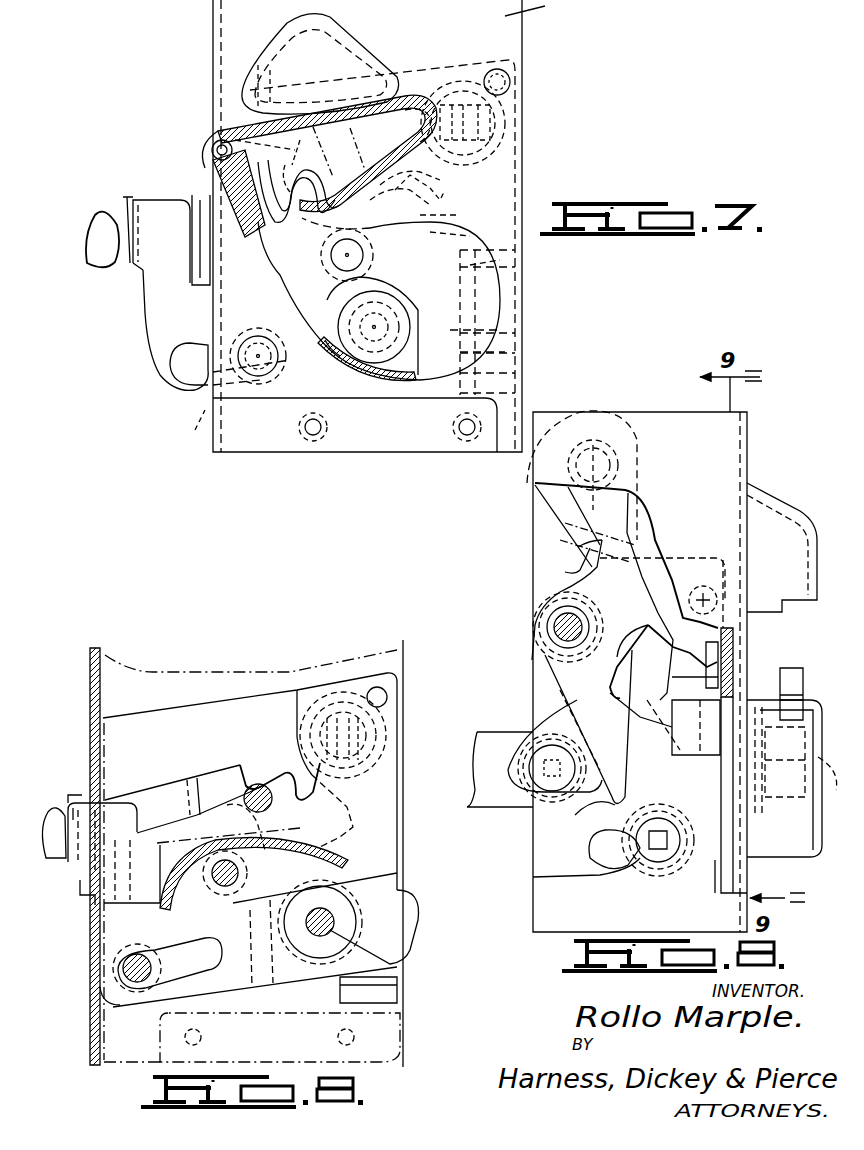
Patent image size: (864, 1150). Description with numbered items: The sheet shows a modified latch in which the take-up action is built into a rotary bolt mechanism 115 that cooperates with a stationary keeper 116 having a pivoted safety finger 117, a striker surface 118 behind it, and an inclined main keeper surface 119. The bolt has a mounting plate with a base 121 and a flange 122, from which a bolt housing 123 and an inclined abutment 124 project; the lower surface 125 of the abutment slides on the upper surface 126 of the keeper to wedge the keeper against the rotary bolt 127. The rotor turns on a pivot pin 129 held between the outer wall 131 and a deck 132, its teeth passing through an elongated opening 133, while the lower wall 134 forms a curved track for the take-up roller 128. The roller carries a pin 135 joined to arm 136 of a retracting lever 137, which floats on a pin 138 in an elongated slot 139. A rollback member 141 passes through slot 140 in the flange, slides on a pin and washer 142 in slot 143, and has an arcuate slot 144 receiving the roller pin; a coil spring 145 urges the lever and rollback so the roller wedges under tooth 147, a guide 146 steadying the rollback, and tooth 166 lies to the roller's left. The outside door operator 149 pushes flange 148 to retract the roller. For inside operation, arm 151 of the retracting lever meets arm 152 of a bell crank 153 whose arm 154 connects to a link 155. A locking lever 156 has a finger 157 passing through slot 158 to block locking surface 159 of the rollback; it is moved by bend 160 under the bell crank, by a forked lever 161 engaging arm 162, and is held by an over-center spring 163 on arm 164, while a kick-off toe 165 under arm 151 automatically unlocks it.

In FIG. 7, the rotary bolt mechanism 115 is at (532, 135).
In FIG. 7, the keeper 116 is at (205, 140).
In FIG. 7, the safety finger 117 is at (287, 181).
In FIG. 7, the striker surface 118 is at (318, 174).
In FIG. 7, the main keeper surface 119 is at (327, 150).
In FIG. 7, the base 121 is at (541, 9).
In FIG. 7, the flange 122 is at (213, 42).
In FIG. 8, the flange 122 is at (665, 424).
In FIG. 7, the bolt housing 123 is at (492, 300).
In FIG. 7, the inclined abutment 124 is at (353, 62).
In FIG. 7, the inclined lower surface 125 is at (412, 110).
In FIG. 7, the inclined upper surface 126 is at (320, 110).
In FIG. 7, the rotary bolt 127 is at (370, 214).
In FIG. 9, the rotary bolt 127 is at (262, 830).
In FIG. 7, the take-up roller 128 is at (408, 330).
In FIG. 9, the take-up roller 128 is at (400, 940).
In FIG. 7, the pivot pin 129 is at (364, 253).
In FIG. 8, the pivot pin 129 is at (826, 715).
In FIG. 9, the pivot pin 129 is at (250, 860).
In FIG. 8, the outer wall 131 is at (836, 790).
In FIG. 8, the deck 132 is at (764, 700).
In FIG. 7, the elongated opening 133 is at (462, 217).
In FIG. 7, the lower wall 134 is at (362, 398).
In FIG. 7, the pin 135 is at (412, 376).
In FIG. 9, the pin 135 is at (318, 940).
In FIG. 7, the arm 136 is at (470, 236).
In FIG. 7, the retracting lever 137 is at (448, 190).
In FIG. 7, the pin 138 is at (436, 176).
In FIG. 9, the pin 138 is at (268, 782).
In FIG. 7, the elongated slot 139 is at (364, 147).
In FIG. 8, the elongated slot 139 is at (700, 668).
In FIG. 9, the elongated slot 139 is at (262, 782).
In FIG. 7, the elongated slot 140 is at (195, 430).
In FIG. 8, the elongated slot 140 is at (714, 880).
In FIG. 9, the elongated slot 140 is at (92, 1026).
In FIG. 7, the rollback member 141 is at (190, 410).
In FIG. 9, the rollback member 141 is at (128, 1010).
In FIG. 7, the pin and washer 142 is at (240, 418).
In FIG. 9, the pin and washer 142 is at (188, 992).
In FIG. 7, the elongated slot 143 is at (178, 374).
In FIG. 9, the elongated slot 143 is at (168, 947).
In FIG. 7, the arcuate slot 144 is at (508, 355).
In FIG. 9, the arcuate slot 144 is at (403, 876).
In FIG. 7, the coil spring 145 is at (440, 190).
In FIG. 9, the coil spring 145 is at (347, 816).
In FIG. 7, the guide 146 is at (505, 333).
In FIG. 9, the guide 146 is at (405, 912).
In FIG. 7, the tooth 147 is at (500, 280).
In FIG. 7, the flange 148 is at (160, 200).
In FIG. 9, the flange 148 is at (110, 792).
In FIG. 7, the outside door operator 149 is at (103, 215).
In FIG. 9, the outside door operator 149 is at (50, 808).
In FIG. 7, the arm 151 is at (318, 222).
In FIG. 8, the arm 151 is at (748, 572).
In FIG. 9, the arm 151 is at (162, 788).
In FIG. 8, the arm 152 is at (692, 558).
In FIG. 8, the bell crank 153 is at (543, 680).
In FIG. 8, the arm 154 is at (540, 723).
In FIG. 8, the link 155 is at (480, 795).
In FIG. 8, the locking lever 156 is at (533, 622).
In FIG. 7, the finger 157 is at (193, 258).
In FIG. 8, the finger 157 is at (678, 812).
In FIG. 9, the finger 157 is at (86, 880).
In FIG. 8, the slot 158 is at (615, 622).
In FIG. 7, the locking surface 159 is at (215, 193).
In FIG. 8, the bend 160 is at (578, 558).
In FIG. 8, the forked lever 161 is at (625, 838).
In FIG. 8, the arm 162 is at (603, 805).
In FIG. 8, the over-center spring 163 is at (620, 462).
In FIG. 8, the arm 164 is at (622, 508).
In FIG. 8, the kick-off toe 165 is at (690, 678).
In FIG. 7, the tooth 166 is at (285, 312).